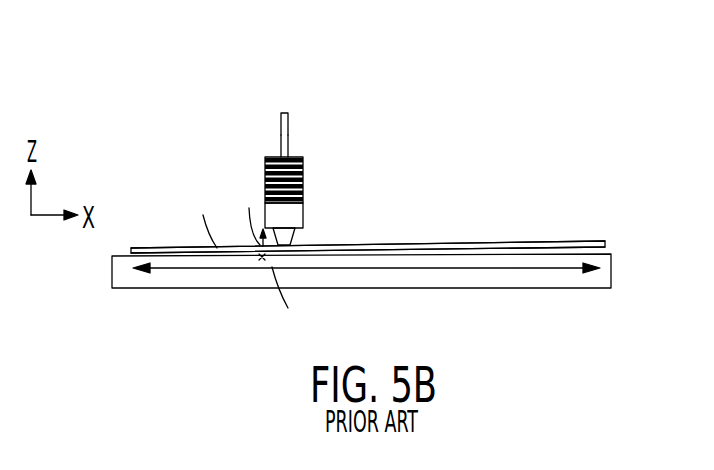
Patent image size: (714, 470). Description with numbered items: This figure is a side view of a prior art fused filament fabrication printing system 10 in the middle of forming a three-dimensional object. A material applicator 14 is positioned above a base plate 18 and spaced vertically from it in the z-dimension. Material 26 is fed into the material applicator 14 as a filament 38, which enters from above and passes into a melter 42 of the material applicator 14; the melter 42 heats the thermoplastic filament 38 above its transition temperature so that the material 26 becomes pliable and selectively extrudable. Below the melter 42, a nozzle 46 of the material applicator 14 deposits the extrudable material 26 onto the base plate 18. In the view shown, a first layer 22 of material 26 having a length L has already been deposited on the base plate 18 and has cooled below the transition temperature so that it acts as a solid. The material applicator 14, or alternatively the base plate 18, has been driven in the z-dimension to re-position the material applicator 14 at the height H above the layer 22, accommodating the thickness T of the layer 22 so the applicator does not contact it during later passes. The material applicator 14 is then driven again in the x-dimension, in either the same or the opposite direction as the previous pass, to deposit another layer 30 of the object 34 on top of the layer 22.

The FFF printing system 10 is at (458, 115).
The material applicator 14 is at (238, 163).
The base plate 18 is at (225, 278).
The first layer 22 is at (193, 248).
The material 26 is at (289, 122).
The layer 30 is at (408, 244).
The object 34 is at (565, 230).
The filament 38 is at (290, 152).
The melter 42 is at (303, 172).
The nozzle 46 is at (295, 218).